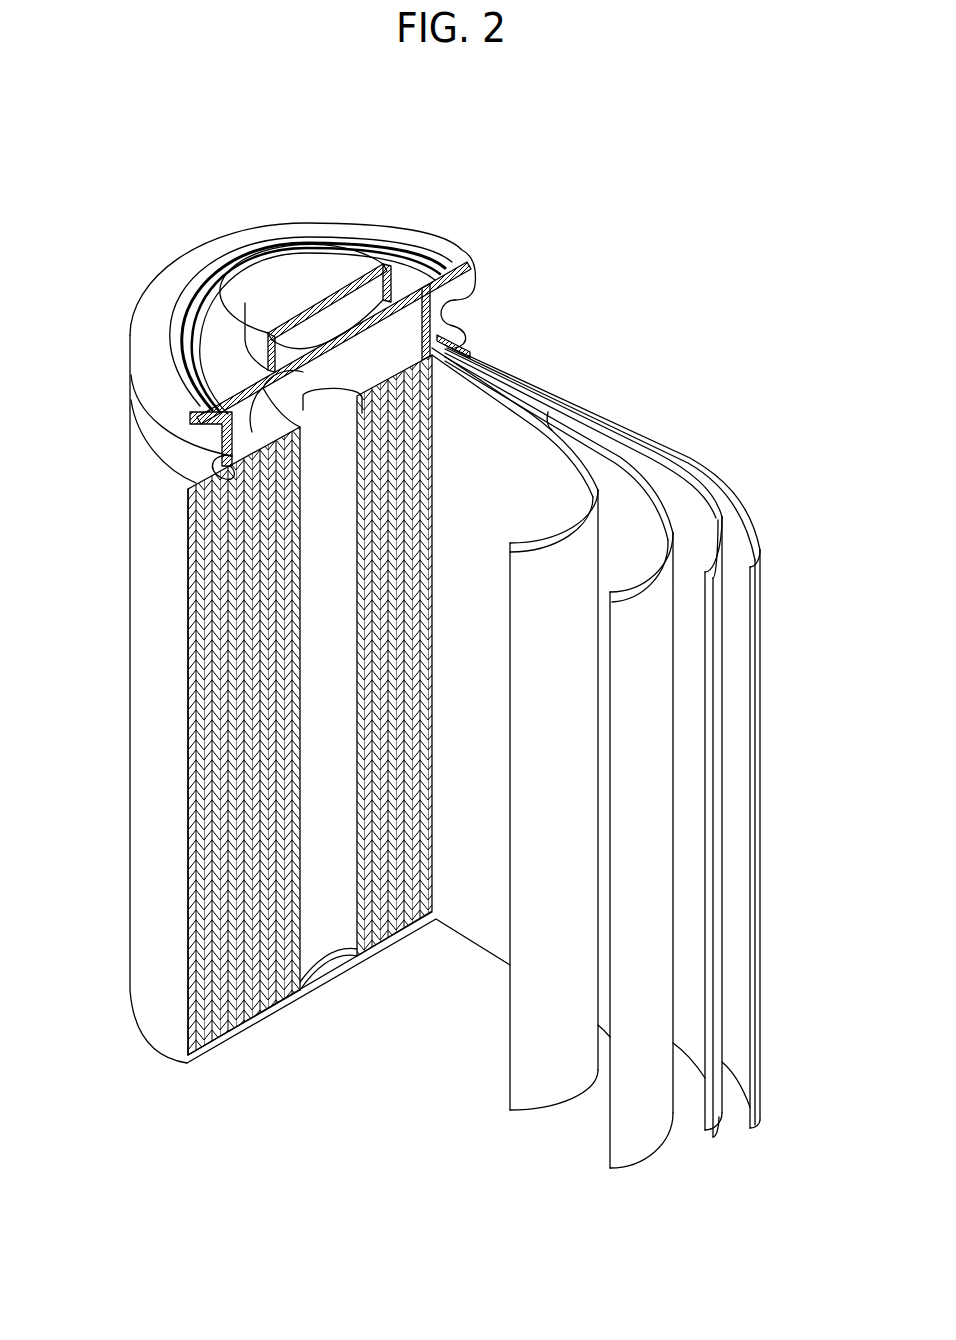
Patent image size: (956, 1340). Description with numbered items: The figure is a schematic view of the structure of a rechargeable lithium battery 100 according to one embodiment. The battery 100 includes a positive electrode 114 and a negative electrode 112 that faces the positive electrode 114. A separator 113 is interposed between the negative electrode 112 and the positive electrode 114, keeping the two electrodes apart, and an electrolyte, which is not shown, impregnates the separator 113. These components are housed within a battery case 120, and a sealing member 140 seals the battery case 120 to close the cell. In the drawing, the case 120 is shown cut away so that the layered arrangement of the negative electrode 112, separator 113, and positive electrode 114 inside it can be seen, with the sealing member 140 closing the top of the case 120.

The rechargeable lithium battery 100 is at (582, 266).
The negative electrode 112 is at (757, 552).
The separator 113 is at (552, 425).
The positive electrode 114 is at (640, 488).
The battery case 120 is at (143, 645).
The sealing member 140 is at (277, 285).